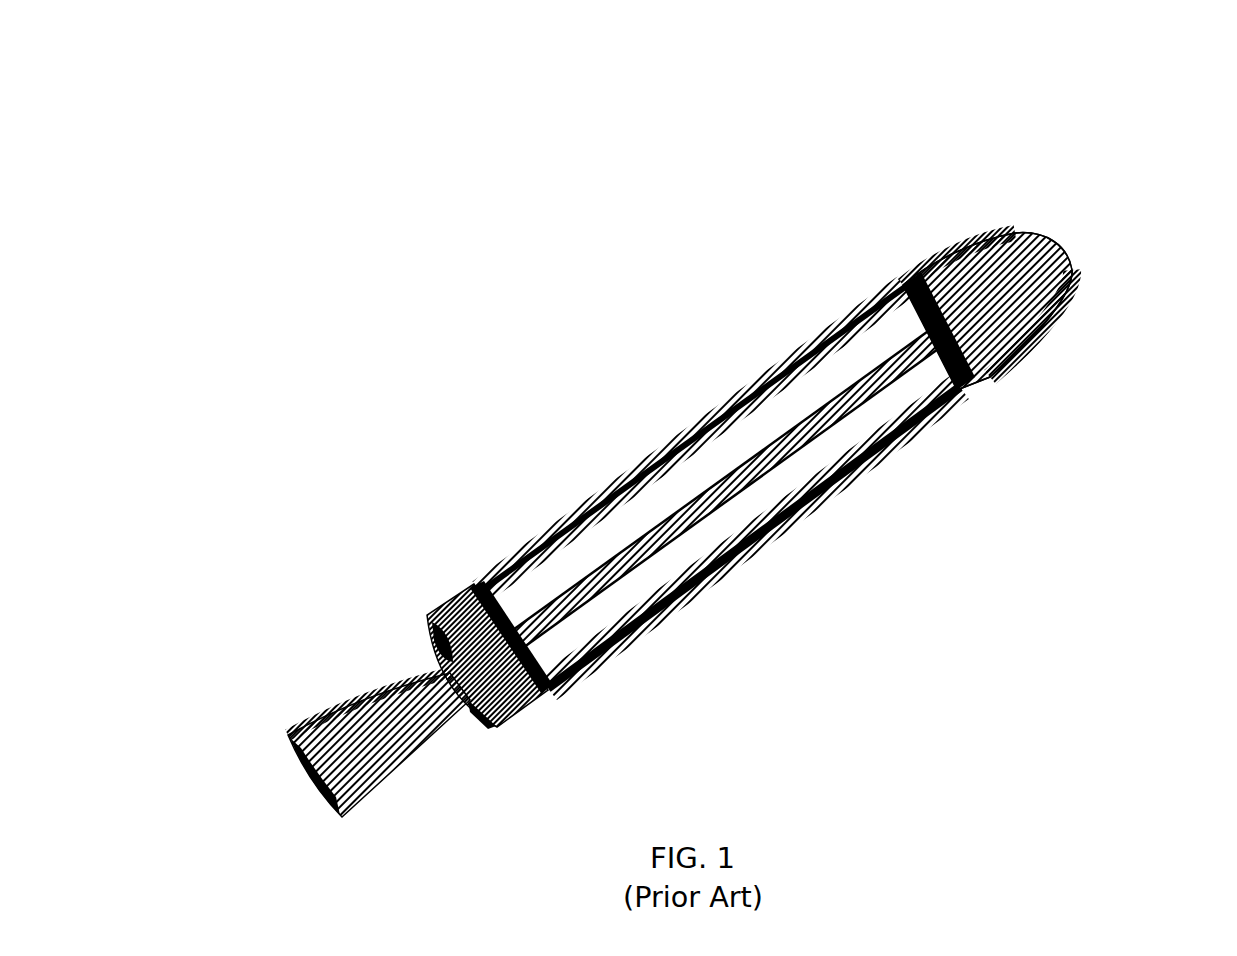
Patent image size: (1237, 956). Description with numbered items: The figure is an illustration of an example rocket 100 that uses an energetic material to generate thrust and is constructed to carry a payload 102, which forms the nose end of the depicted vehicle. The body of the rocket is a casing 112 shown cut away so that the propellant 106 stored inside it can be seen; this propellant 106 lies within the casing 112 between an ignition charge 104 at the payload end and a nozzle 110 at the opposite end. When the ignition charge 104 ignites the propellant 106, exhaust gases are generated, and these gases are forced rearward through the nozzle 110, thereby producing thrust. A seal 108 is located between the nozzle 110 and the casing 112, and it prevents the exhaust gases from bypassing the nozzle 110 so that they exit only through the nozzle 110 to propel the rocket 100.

The rocket 100 is at (669, 425).
The payload 102 is at (1032, 270).
The ignition charge 104 is at (907, 313).
The propellant 106 is at (590, 618).
The seal 108 is at (450, 602).
The nozzle 110 is at (353, 692).
The casing 112 is at (723, 570).